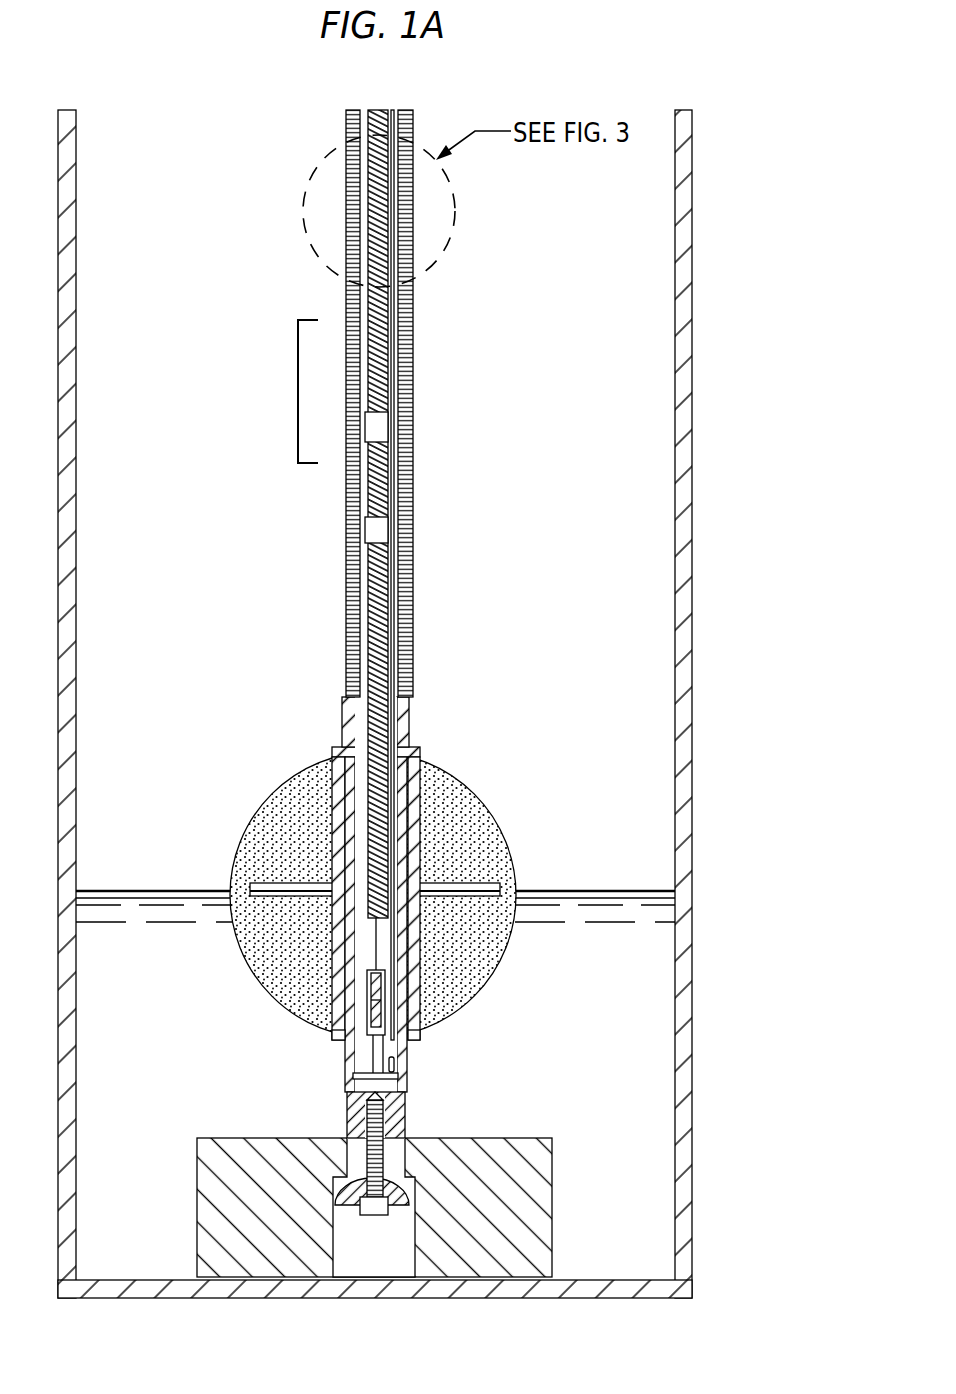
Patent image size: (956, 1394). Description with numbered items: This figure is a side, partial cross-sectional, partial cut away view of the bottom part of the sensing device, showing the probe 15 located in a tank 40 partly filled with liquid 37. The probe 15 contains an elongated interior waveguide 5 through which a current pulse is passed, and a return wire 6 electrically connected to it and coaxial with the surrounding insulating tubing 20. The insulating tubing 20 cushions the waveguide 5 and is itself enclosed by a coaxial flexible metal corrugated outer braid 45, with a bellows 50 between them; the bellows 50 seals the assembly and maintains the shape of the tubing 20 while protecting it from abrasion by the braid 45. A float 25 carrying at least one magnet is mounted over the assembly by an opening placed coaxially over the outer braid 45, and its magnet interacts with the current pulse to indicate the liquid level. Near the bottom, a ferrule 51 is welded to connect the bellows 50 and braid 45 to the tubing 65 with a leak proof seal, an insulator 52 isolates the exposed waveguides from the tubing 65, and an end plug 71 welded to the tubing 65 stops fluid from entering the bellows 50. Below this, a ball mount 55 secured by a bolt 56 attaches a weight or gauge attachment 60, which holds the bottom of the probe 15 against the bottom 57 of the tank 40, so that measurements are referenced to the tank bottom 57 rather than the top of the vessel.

The waveguide 5 is at (372, 955).
The return wire 6 is at (412, 1041).
The probe 15 is at (298, 389).
The insulating tubing 20 is at (380, 312).
The float 25 is at (481, 856).
The liquid 37 is at (617, 890).
The tank 40 is at (693, 338).
The flexible metal corrugated outer braid 45 is at (412, 361).
The bellows 50 is at (395, 386).
The ferrule 51 is at (410, 726).
The insulator 52 is at (413, 793).
The ball mount 55 is at (350, 1195).
The bolt 56 is at (339, 1138).
The tank bottom 57 is at (620, 1280).
The weight or gauge attachment 60 is at (503, 1228).
The tubing 65 is at (405, 1076).
The end plug 71 is at (397, 1113).